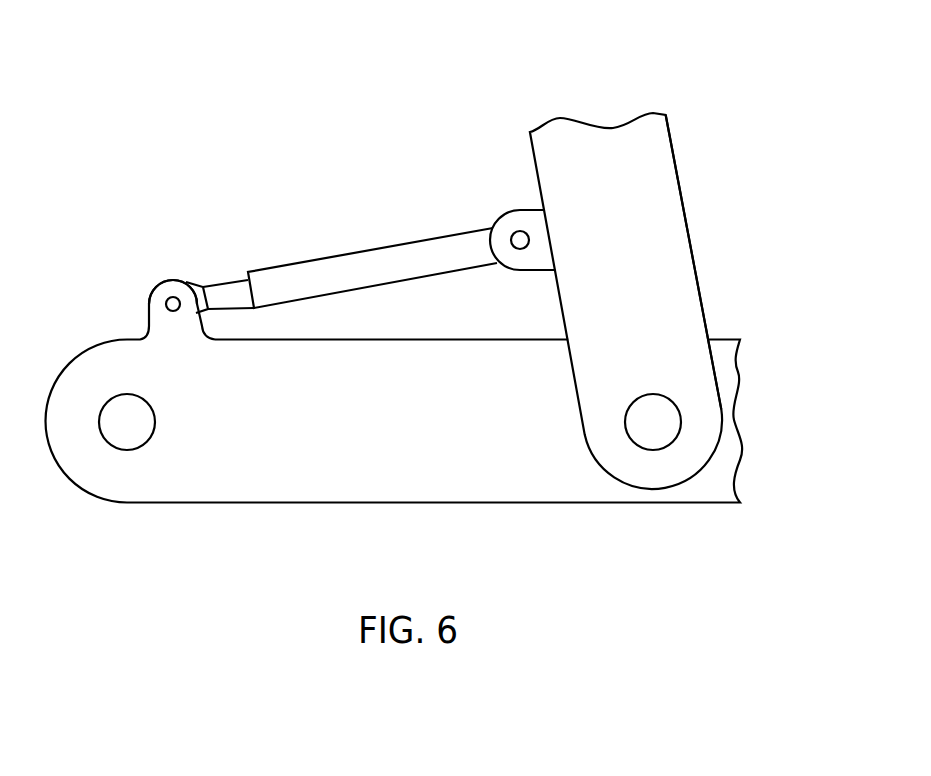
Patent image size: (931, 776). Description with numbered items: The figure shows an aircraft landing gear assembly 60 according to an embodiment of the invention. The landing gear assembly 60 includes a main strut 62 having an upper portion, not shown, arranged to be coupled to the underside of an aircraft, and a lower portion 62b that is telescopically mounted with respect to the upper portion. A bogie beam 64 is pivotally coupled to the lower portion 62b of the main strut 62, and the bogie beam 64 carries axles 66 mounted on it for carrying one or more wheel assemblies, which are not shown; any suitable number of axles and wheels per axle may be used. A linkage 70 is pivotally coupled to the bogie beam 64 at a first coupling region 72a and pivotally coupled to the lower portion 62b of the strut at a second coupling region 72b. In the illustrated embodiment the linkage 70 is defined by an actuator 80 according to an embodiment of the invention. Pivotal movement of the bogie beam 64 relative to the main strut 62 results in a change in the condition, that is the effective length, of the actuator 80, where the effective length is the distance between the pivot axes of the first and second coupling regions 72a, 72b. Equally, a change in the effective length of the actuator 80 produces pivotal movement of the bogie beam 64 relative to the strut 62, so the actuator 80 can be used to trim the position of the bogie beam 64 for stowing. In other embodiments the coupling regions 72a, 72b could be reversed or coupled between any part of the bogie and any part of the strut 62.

The landing gear assembly 60 is at (648, 86).
The main strut 62 is at (677, 154).
The lower portion 62b is at (691, 248).
The bogie beam 64 is at (418, 503).
The axles 66 is at (155, 421).
The linkage 70 is at (314, 232).
The first coupling region 72a is at (150, 297).
The second coupling region 72b is at (517, 211).
The actuator 80 is at (305, 261).